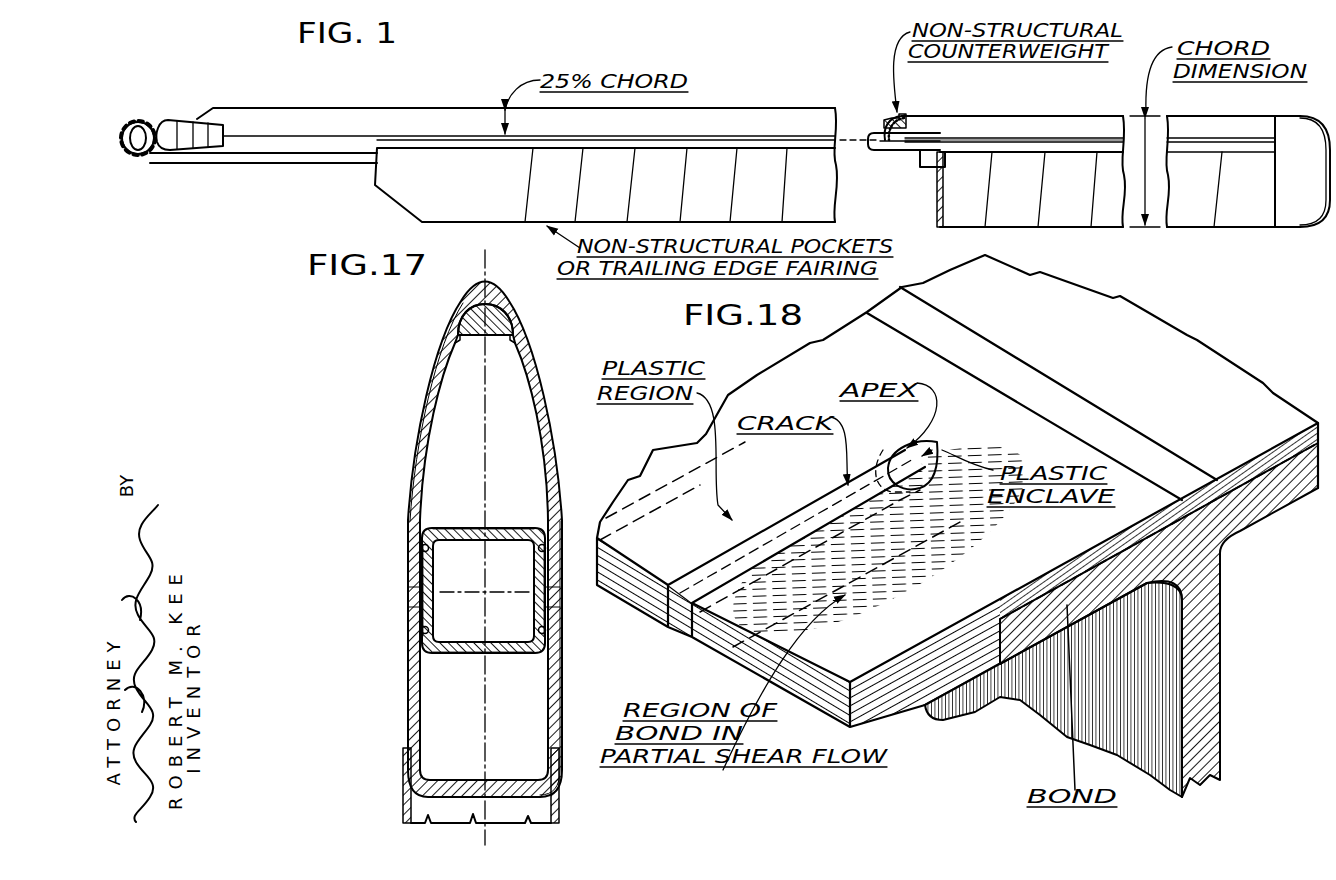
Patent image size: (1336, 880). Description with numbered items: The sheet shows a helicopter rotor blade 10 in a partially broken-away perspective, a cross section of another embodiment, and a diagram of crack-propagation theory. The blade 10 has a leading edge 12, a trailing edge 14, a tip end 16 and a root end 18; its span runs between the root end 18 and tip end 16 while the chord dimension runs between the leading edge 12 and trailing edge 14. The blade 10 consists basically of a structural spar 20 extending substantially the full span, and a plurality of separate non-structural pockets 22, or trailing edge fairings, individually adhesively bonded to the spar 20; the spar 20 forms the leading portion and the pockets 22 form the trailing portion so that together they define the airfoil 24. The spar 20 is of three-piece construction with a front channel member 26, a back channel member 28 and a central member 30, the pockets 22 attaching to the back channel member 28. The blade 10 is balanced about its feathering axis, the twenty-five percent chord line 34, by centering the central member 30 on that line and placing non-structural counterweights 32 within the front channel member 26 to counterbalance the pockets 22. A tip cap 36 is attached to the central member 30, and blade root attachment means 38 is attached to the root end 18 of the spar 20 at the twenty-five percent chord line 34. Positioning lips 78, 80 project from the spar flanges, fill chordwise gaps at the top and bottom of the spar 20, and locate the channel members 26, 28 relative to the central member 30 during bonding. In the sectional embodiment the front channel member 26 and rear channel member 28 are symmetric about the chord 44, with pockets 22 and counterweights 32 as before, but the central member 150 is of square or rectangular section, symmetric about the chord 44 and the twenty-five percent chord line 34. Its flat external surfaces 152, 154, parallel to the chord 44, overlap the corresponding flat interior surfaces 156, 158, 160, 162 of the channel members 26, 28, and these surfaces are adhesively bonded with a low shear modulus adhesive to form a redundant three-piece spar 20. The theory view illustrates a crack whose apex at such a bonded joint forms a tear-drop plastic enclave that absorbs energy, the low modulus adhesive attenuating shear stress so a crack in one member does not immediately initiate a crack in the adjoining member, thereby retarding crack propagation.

In FIG. 1, the helicopter rotor blade 10 is at (768, 103).
In FIG. 17, the helicopter rotor blade 10 is at (370, 680).
In FIG. 1, the leading edge 12 is at (1000, 116).
In FIG. 1, the trailing edge 14 is at (1023, 227).
In FIG. 1, the tip end 16 is at (1251, 155).
In FIG. 1, the root end 18 is at (207, 117).
In FIG. 1, the structural spar 20 is at (338, 117).
In FIG. 17, the structural spar 20 is at (420, 418).
In FIG. 1, the non-structural pockets 22 is at (500, 208).
In FIG. 17, the non-structural pockets 22 is at (405, 805).
In FIG. 1, the airfoil 24 is at (1070, 210).
In FIG. 1, the front channel member 26 is at (930, 122).
In FIG. 17, the front channel member 26 is at (440, 378).
In FIG. 18, the front channel member 26 is at (902, 700).
In FIG. 1, the back channel member 28 is at (936, 205).
In FIG. 17, the back channel member 28 is at (560, 682).
In FIG. 18, the back channel member 28 is at (1283, 470).
In FIG. 1, the central member 30 is at (900, 160).
In FIG. 18, the central member 30 is at (1020, 652).
In FIG. 1, the non-structural counterweights 32 is at (893, 115).
In FIG. 17, the non-structural counterweights 32 is at (462, 322).
In FIG. 1, the 25% chord line 34 is at (858, 150).
In FIG. 17, the 25% chord line 34 is at (482, 597).
In FIG. 1, the tip cap 36 is at (1293, 220).
In FIG. 1, the blade root attachment means 38 is at (138, 118).
In FIG. 17, the chord 44 is at (487, 443).
In FIG. 1, the positioning lip 78 is at (1057, 142).
In FIG. 17, the positioning lip 78 is at (560, 593).
In FIG. 18, the positioning lip 78 is at (1097, 430).
In FIG. 17, the positioning lip 80 is at (412, 592).
In FIG. 17, the central member 150 is at (465, 655).
In FIG. 17, the external surface 152 is at (545, 565).
In FIG. 17, the external surface 154 is at (430, 565).
In FIG. 17, the interior surface 156 is at (559, 527).
In FIG. 17, the interior surface 158 is at (545, 635).
In FIG. 17, the interior surface 160 is at (421, 540).
In FIG. 17, the interior surface 162 is at (412, 627).